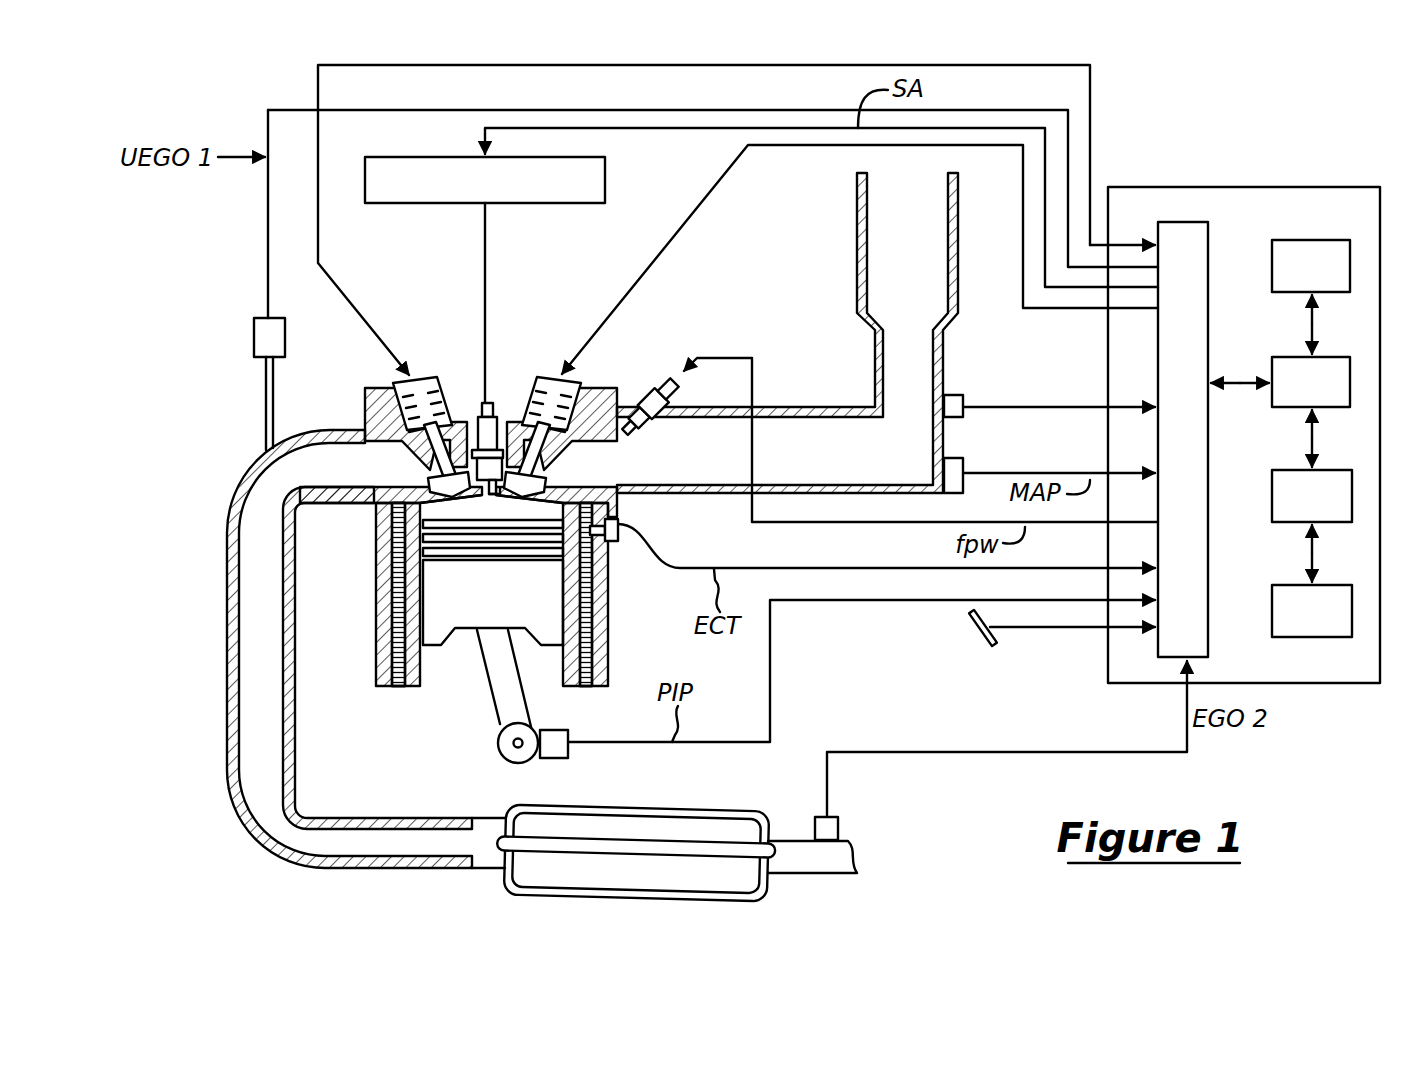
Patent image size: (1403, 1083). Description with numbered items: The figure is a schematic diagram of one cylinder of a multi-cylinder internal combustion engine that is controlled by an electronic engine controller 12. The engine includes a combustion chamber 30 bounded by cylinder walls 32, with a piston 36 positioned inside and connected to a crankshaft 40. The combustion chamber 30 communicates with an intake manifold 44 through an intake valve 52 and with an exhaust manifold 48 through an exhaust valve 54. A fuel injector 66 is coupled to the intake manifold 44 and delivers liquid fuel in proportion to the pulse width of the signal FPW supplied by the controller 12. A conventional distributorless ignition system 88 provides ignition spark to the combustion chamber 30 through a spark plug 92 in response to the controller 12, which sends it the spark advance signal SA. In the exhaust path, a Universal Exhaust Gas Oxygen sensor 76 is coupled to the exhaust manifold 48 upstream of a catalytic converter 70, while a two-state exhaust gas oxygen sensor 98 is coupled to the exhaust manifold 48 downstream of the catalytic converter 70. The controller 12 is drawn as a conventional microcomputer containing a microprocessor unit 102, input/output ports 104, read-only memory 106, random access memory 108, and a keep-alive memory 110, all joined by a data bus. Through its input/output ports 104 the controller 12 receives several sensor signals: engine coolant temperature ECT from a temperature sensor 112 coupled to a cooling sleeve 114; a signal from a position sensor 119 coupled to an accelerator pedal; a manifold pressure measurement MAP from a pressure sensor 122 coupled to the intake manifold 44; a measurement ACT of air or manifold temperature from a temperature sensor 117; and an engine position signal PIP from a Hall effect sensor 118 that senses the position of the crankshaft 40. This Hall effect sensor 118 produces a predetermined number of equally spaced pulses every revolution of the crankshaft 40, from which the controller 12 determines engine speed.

The electronic engine controller 12 is at (1240, 187).
The input/output ports 104 is at (1209, 237).
The read-only memory 106 is at (1310, 240).
The microprocessor unit 102 is at (1282, 357).
The random access memory 108 is at (1284, 470).
The keep alive memory (KAM) 110 is at (1288, 585).
The distributorless ignition system 88 is at (370, 157).
The spark plug 92 is at (493, 400).
The fuel injector 66 is at (651, 389).
The intake manifold 44 is at (856, 467).
The temperature sensor 117 is at (969, 396).
The pressure sensor 122 is at (967, 462).
The exhaust valve 54 is at (425, 480).
The intake valve 52 is at (549, 480).
The exhaust manifold 48 is at (232, 506).
The Universal Exhaust Gas Oxygen sensor 76 is at (254, 337).
The combustion chamber 30 is at (450, 512).
The cylinder walls 32 is at (425, 688).
The cooling sleeve 114 is at (388, 688).
The temperature sensor 112 is at (620, 530).
The piston 36 is at (498, 612).
The crankshaft 40 is at (497, 748).
The Hall effect sensor 118 is at (556, 730).
The position sensor 119 is at (979, 647).
The catalytic converter 70 is at (588, 808).
The two-state exhaust gas oxygen sensor 98 is at (813, 813).